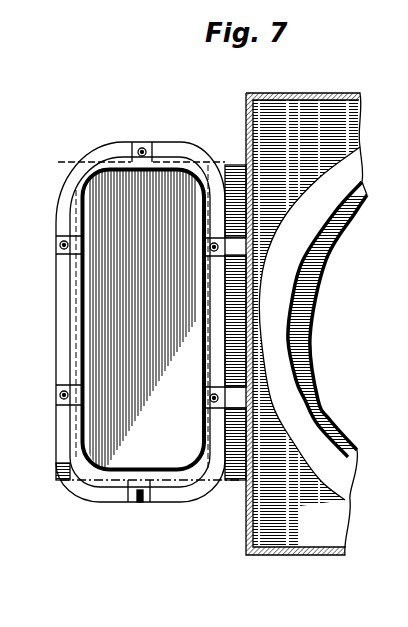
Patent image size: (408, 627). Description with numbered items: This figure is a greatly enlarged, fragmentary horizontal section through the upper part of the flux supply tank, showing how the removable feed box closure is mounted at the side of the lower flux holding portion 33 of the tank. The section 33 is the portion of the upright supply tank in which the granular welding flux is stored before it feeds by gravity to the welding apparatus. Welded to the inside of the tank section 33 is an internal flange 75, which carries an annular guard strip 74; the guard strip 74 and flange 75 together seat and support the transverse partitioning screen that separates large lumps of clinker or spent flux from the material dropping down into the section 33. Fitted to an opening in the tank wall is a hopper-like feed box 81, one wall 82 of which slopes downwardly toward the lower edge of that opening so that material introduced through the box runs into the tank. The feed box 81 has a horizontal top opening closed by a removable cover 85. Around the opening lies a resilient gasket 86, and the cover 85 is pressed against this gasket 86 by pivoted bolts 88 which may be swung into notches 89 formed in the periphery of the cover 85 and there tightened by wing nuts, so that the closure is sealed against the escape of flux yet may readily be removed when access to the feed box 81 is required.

The lower flux holding portion 33 is at (292, 556).
The annular guard strip 74 is at (278, 310).
The internal flange 75 is at (302, 372).
The feed box 81 is at (223, 475).
The sloping wall 82 is at (172, 466).
The removable cover 85 is at (62, 434).
The resilient gasket 86 is at (72, 306).
The pivoted bolts 88 is at (147, 148).
The notches 89 is at (139, 147).